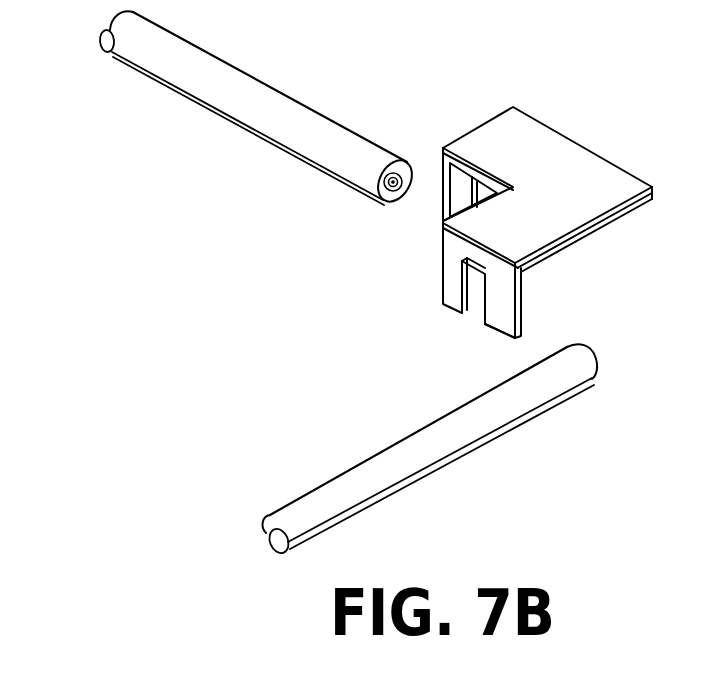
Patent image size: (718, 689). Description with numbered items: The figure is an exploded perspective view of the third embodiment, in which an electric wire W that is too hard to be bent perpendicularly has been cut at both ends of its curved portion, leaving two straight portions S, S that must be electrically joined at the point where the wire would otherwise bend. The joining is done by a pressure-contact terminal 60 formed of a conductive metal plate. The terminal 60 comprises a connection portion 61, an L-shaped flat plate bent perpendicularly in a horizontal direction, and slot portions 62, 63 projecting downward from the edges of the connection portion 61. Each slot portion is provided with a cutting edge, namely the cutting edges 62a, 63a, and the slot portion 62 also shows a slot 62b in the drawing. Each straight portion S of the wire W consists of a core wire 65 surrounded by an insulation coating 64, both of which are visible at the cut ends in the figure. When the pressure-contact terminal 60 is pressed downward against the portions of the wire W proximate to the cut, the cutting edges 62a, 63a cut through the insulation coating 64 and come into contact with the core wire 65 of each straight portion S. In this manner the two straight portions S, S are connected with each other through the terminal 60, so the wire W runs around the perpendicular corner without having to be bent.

The straight portion S is at (290, 114).
The electric wire W is at (158, 70).
The pressure-contact terminal 60 is at (514, 211).
The connection portion 61 is at (537, 142).
The slot portion 62 is at (488, 307).
The cutting edge 62a is at (503, 306).
The slot 62b is at (468, 292).
The slot portion 63 is at (420, 231).
The cutting edge 63a is at (459, 198).
The insulation coating 64 is at (390, 202).
The core wire 65 is at (408, 163).